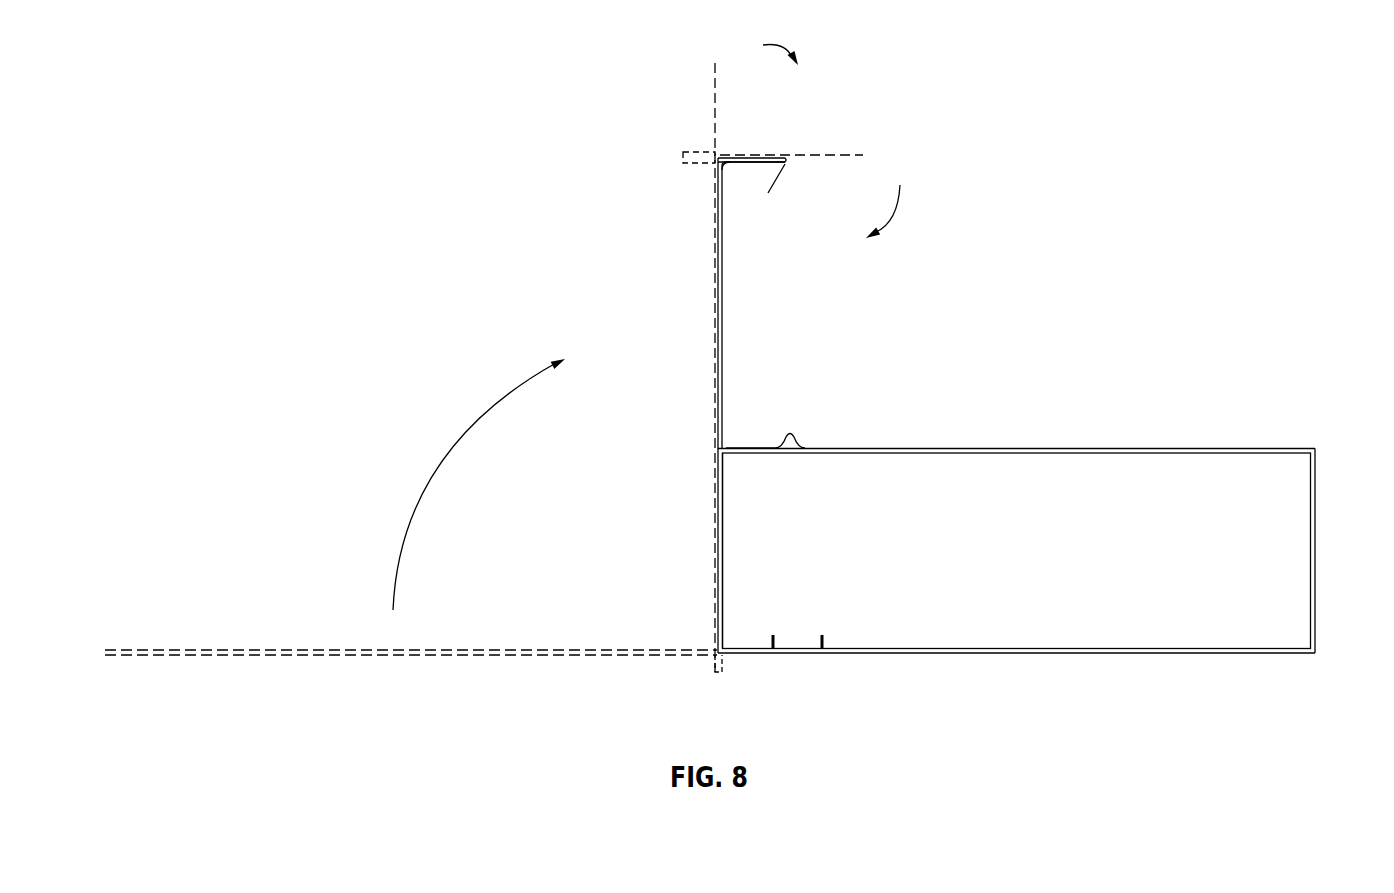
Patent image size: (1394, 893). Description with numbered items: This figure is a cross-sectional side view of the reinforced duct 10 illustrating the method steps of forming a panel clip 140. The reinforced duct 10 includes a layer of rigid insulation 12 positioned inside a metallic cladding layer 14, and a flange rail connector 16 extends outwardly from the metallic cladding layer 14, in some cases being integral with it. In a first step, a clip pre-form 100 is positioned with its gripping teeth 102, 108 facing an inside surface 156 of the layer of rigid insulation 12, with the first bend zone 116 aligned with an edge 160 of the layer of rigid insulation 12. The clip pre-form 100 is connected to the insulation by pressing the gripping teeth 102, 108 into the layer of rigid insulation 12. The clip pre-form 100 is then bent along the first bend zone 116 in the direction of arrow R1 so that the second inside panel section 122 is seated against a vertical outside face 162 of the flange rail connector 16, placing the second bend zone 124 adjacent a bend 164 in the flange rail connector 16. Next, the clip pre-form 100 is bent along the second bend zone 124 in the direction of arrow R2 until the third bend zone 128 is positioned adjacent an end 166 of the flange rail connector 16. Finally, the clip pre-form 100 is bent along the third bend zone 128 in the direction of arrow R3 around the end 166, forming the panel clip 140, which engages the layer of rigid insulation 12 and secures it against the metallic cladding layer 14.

The reinforced duct 10 is at (1170, 653).
The layer of rigid insulation 12 is at (1295, 568).
The metallic cladding layer 14 is at (1213, 447).
The flange rail connector 16 is at (723, 283).
The clip pre-form 100 is at (578, 657).
The gripping tooth 102 is at (823, 635).
The gripping tooth 108 is at (773, 635).
The first bend zone 116 is at (717, 673).
The second inside panel section 122 is at (716, 367).
The second bend zone 124 is at (683, 158).
The third bend zone 128 is at (753, 144).
The panel clip 140 is at (768, 193).
The inside surface 156 is at (1030, 653).
The edge 160 is at (723, 500).
The vertical outside face 162 is at (715, 552).
The bend 164 is at (728, 164).
The end 166 is at (786, 164).
The direction arrow R1 is at (479, 484).
The direction arrow R2 is at (762, 49).
The direction arrow R3 is at (900, 211).